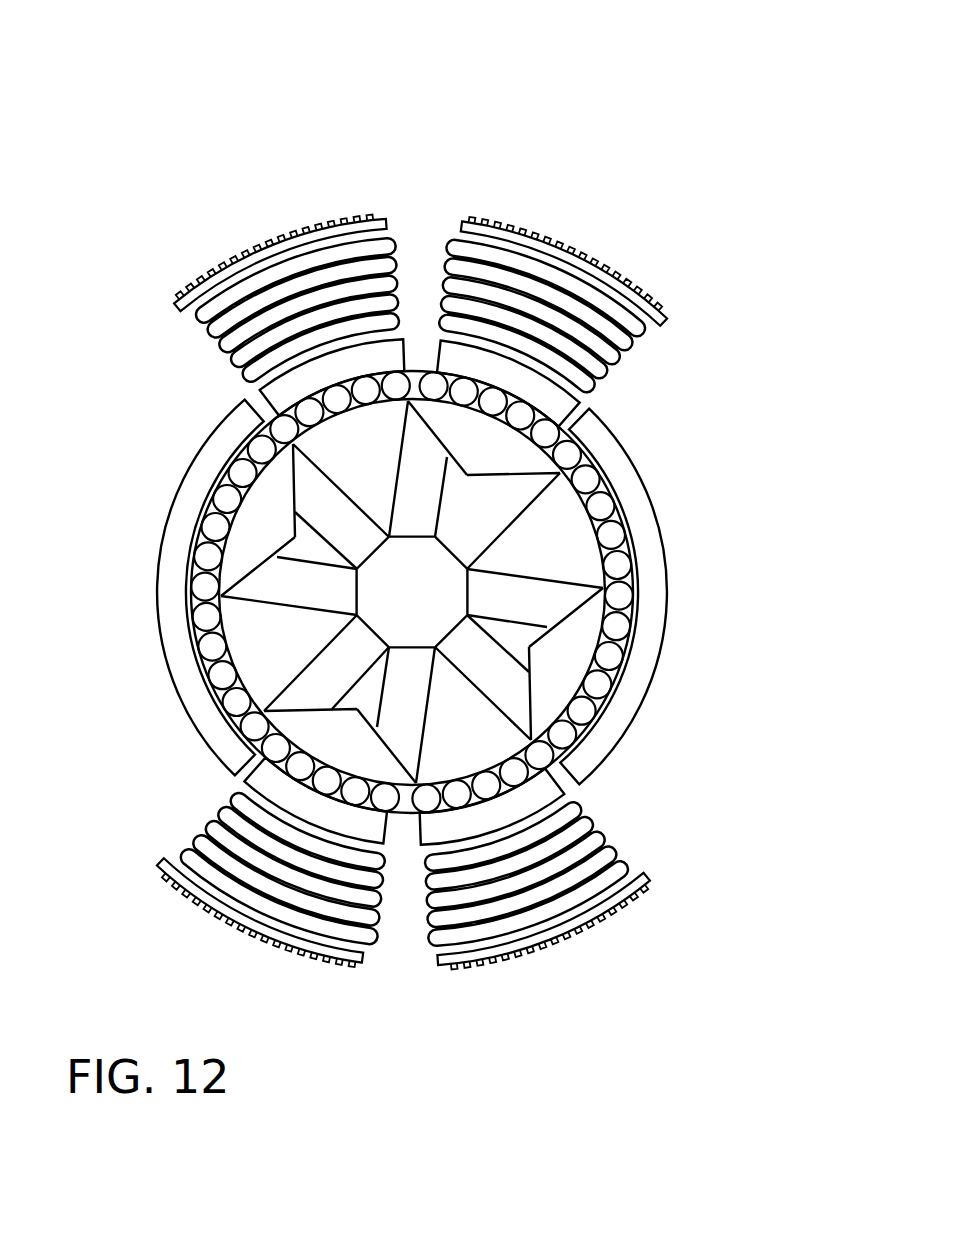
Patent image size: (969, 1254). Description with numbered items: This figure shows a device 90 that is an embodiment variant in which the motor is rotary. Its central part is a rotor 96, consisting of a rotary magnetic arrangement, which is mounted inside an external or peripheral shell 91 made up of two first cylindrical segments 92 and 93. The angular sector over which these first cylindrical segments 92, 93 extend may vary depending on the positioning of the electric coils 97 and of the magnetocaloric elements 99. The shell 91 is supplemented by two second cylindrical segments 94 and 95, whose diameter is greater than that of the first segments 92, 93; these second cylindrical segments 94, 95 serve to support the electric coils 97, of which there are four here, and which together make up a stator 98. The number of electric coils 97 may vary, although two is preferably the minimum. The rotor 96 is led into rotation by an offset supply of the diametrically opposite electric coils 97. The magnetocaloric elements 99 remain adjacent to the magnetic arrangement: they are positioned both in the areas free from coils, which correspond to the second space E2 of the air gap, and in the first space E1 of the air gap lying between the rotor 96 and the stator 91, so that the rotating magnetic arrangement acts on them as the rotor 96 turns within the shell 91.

The device 90 is at (589, 104).
The external shell 91 is at (720, 669).
The first cylindrical segment 92 is at (205, 718).
The first cylindrical segment 93 is at (622, 720).
The second cylindrical segment 94 is at (502, 240).
The second cylindrical segment 95 is at (453, 972).
The rotor 96 is at (560, 550).
The electric coil 97 is at (538, 290).
The stator 98 is at (640, 371).
The magnetocaloric element 99 is at (612, 503).
The first space E1 is at (342, 416).
The second space E2 is at (170, 640).